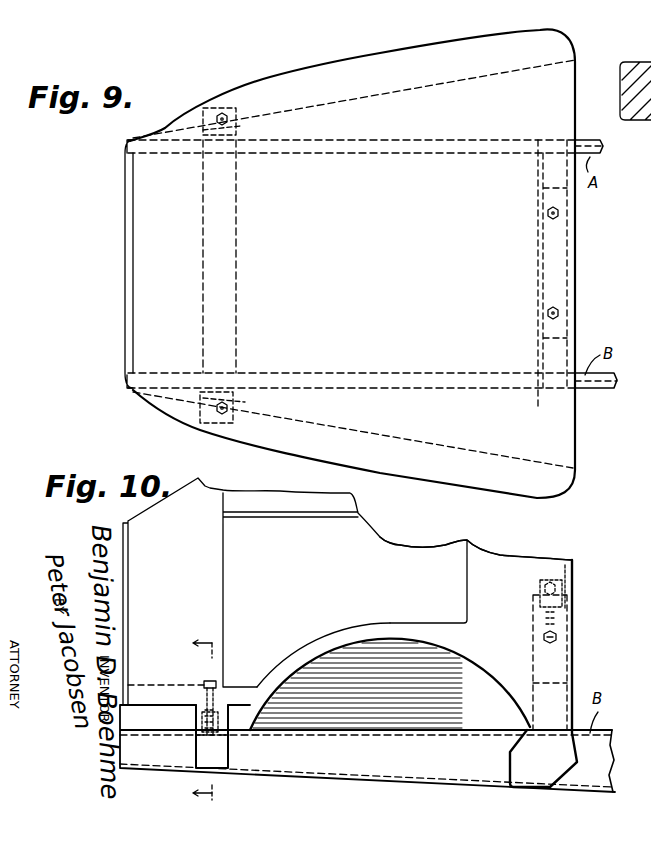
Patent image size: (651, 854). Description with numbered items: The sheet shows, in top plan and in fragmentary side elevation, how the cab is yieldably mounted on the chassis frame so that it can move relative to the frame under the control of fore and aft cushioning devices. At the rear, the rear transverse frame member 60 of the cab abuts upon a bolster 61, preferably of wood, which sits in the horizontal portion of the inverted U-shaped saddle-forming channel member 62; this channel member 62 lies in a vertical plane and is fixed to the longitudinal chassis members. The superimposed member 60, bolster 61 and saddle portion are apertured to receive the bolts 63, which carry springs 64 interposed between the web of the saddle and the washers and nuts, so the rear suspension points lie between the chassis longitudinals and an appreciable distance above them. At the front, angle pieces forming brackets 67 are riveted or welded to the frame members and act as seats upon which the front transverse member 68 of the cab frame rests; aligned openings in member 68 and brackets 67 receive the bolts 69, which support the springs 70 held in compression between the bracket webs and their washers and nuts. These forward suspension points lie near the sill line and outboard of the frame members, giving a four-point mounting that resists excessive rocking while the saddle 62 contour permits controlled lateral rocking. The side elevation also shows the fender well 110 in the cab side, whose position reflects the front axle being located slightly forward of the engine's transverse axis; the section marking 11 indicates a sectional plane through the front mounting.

In FIG. 10, the rear transverse frame member 60 is at (545, 575).
In FIG. 10, the bolster 61 is at (533, 592).
In FIG. 9, the saddle-forming channel member 62 is at (648, 198).
In FIG. 9, the bolts 63 is at (558, 216).
In FIG. 10, the springs 64 is at (568, 625).
In FIG. 9, the brackets 67 is at (236, 105).
In FIG. 10, the brackets 67 is at (228, 745).
In FIG. 9, the front transverse member 68 is at (236, 230).
In FIG. 9, the bolts 69 is at (236, 126).
In FIG. 10, the bolts 69 is at (195, 690).
In FIG. 9, the springs 70 is at (630, 195).
In FIG. 10, the springs 70 is at (198, 720).
In FIG. 10, the fender well 110 is at (400, 703).
In FIG. 10, the section line 11 is at (191, 712).